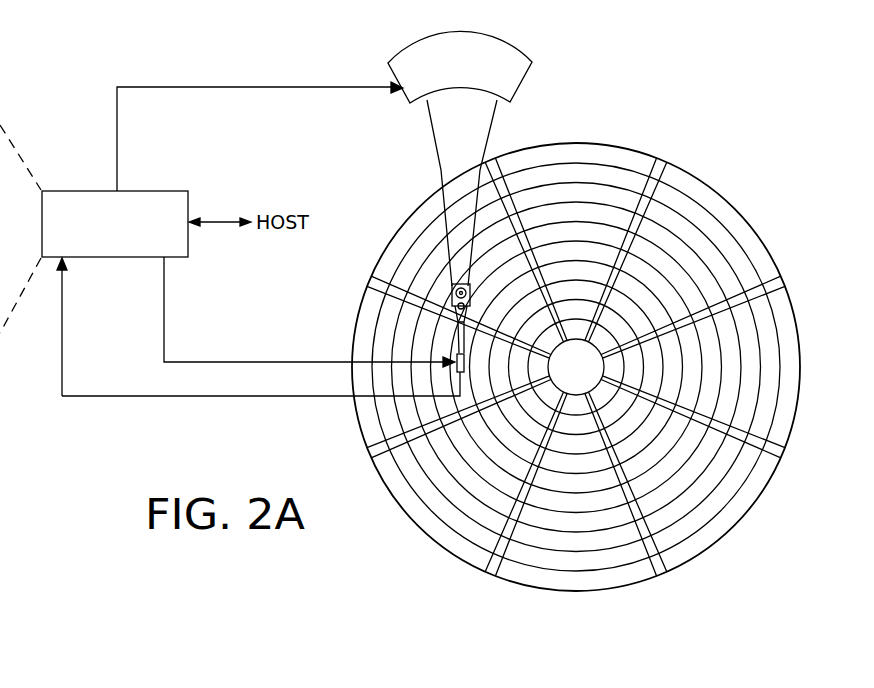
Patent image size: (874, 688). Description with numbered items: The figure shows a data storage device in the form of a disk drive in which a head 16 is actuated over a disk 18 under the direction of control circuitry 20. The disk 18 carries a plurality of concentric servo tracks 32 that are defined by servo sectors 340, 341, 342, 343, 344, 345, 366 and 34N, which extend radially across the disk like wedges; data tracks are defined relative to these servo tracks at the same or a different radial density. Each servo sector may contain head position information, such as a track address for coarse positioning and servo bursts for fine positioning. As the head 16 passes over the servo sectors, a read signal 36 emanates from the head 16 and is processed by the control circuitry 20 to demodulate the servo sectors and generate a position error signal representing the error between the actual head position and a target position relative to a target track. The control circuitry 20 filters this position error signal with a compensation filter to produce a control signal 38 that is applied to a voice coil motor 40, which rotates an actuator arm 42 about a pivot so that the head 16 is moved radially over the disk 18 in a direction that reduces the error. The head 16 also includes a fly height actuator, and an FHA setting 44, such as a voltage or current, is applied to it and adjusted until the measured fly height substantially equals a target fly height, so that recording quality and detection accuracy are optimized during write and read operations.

The head 16 is at (468, 362).
The disk 18 is at (733, 193).
The control circuitry 20 is at (155, 190).
The servo tracks 32 is at (575, 174).
The servo sector 340 is at (665, 168).
The servo sector 341 is at (776, 287).
The servo sector 342 is at (779, 449).
The servo sector 343 is at (656, 568).
The servo sector 344 is at (490, 568).
The servo sector 345 is at (372, 452).
The servo sector 366 is at (378, 282).
The servo sector 34N is at (502, 168).
The read signal 36 is at (315, 398).
The control signal 38 is at (117, 131).
The voice coil motor 40 is at (402, 93).
The actuator arm 42 is at (441, 173).
The FHA setting 44 is at (290, 361).